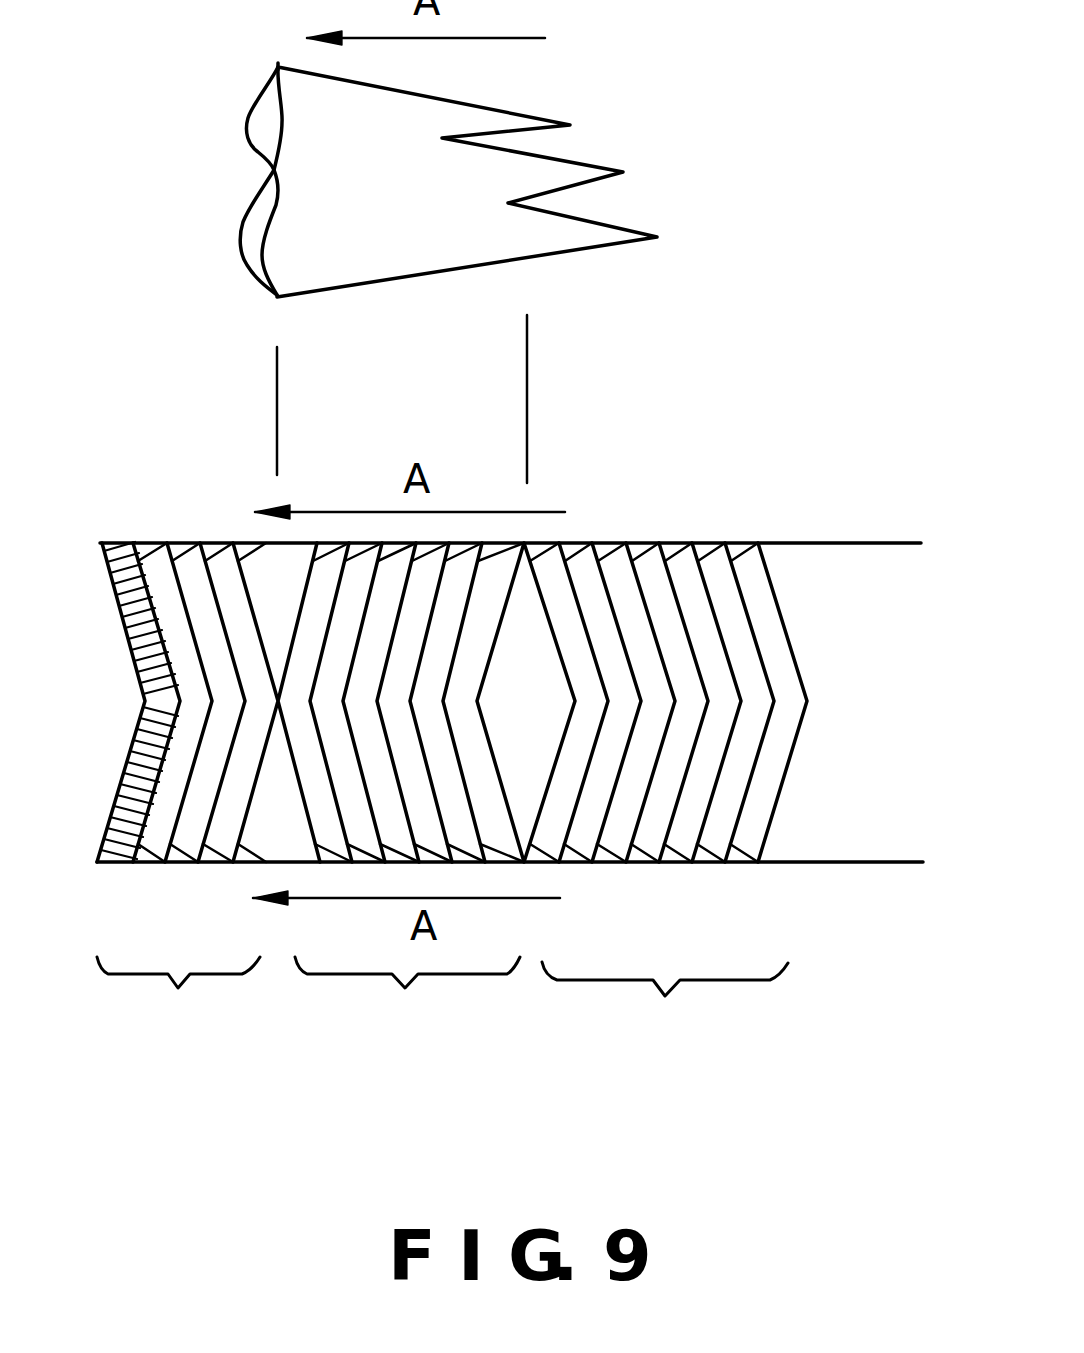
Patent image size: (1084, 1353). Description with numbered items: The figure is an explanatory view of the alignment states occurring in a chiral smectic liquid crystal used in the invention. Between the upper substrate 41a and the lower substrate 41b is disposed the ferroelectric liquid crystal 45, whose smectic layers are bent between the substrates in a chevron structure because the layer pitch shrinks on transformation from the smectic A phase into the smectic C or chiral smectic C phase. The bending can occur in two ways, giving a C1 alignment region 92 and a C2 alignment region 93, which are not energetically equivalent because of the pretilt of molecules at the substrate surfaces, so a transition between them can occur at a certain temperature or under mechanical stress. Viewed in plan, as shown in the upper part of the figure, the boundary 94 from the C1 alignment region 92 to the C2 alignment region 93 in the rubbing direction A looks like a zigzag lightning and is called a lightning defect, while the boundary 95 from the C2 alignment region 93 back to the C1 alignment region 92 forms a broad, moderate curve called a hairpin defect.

The upper substrate 41a is at (832, 543).
The lower substrate 41b is at (825, 867).
The ferroelectric liquid crystal 45 is at (788, 661).
The C1 alignment region 92 is at (442, 1007).
The C2 alignment region 93 is at (407, 1003).
The boundary of transition from C1 alignment to C2 alignment 94 is at (513, 110).
The boundary of transition from C2 alignment to C1 alignment 95 is at (248, 118).